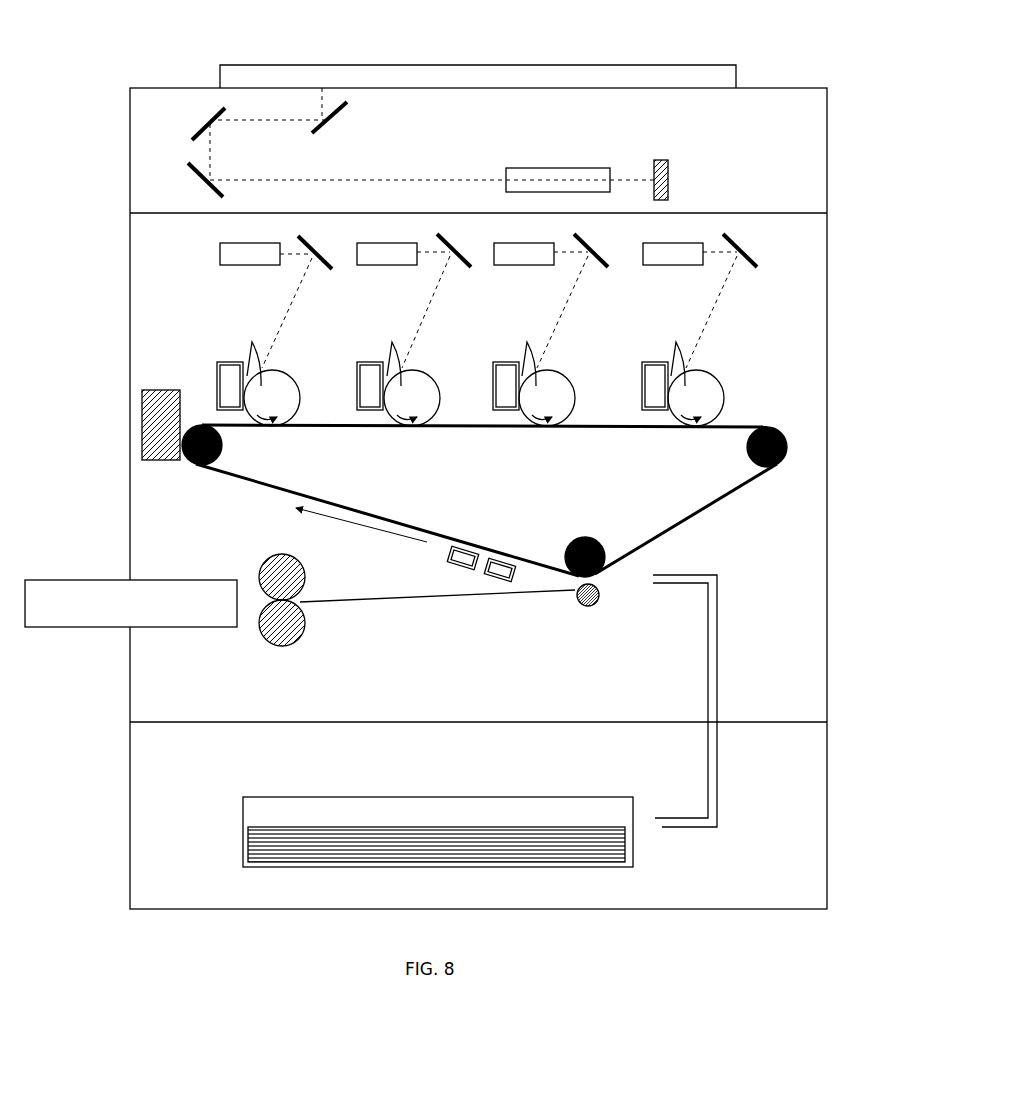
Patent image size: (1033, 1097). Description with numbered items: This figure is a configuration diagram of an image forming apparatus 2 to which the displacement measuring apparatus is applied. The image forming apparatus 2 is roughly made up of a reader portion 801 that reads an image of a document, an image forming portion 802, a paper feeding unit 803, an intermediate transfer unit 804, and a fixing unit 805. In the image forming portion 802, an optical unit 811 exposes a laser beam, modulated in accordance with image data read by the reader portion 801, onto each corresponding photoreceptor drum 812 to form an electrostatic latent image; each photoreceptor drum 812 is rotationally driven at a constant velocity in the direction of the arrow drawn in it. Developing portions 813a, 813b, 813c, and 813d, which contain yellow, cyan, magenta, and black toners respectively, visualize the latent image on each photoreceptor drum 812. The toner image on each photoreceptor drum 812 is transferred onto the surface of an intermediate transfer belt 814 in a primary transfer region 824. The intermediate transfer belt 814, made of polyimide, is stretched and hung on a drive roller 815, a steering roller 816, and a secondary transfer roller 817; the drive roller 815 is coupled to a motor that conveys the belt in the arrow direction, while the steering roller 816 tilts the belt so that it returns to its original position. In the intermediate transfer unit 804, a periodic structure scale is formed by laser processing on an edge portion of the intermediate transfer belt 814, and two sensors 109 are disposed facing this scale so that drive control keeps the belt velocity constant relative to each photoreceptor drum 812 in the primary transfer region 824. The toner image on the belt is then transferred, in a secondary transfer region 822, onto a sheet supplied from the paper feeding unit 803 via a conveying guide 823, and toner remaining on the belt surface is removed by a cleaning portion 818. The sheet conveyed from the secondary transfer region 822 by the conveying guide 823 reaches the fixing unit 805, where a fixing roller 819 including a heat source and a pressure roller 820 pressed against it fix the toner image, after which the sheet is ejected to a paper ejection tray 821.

The image forming apparatus 2 is at (757, 48).
The reader portion 801 is at (798, 110).
The image forming portion 802 is at (790, 313).
The paper feeding unit 803 is at (798, 867).
The intermediate transfer unit 804 is at (560, 508).
The fixing unit 805 is at (218, 673).
The optical unit 811 is at (225, 262).
The photoreceptor drum 812 is at (260, 388).
The developing portion 813a is at (230, 385).
The developing portion 813b is at (370, 385).
The developing portion 813c is at (506, 385).
The developing portion 813d is at (655, 385).
The intermediate transfer belt 814 is at (408, 525).
The drive roller 815 is at (198, 462).
The steering roller 816 is at (790, 438).
The secondary transfer roller 817 is at (598, 545).
The cleaning portion 818 is at (152, 390).
The fixing roller 819 is at (295, 578).
The pressure roller 820 is at (320, 630).
The paper ejection tray 821 is at (95, 590).
The secondary transfer region 822 is at (550, 590).
The conveying guide 823 is at (465, 602).
The primary transfer region 824 is at (282, 430).
The sensor 109 is at (472, 548).